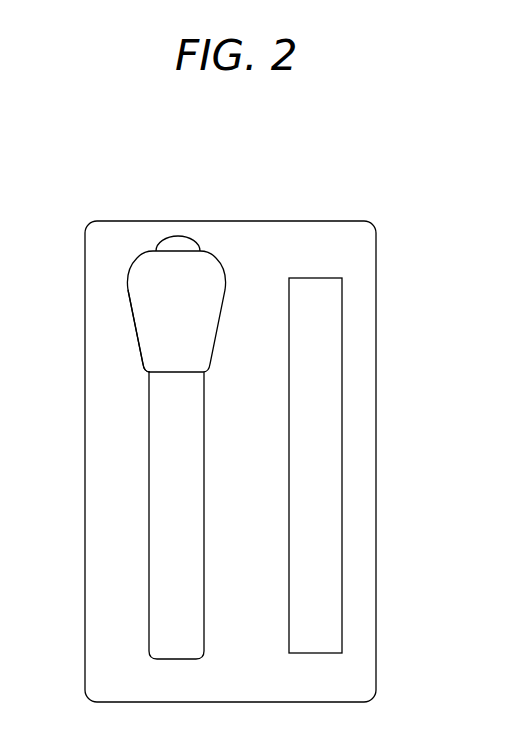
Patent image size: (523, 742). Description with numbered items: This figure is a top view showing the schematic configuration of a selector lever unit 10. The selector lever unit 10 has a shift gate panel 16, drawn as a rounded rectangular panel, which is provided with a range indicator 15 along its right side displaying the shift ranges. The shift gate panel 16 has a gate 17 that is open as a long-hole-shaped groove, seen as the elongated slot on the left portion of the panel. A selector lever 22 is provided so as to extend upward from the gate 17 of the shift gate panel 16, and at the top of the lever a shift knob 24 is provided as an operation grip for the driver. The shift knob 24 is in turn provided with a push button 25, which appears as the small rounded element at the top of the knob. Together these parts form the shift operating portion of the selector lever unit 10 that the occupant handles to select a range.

The selector lever unit 10 is at (217, 190).
The range indicator 15 is at (342, 463).
The shift gate panel 16 is at (322, 221).
The gate 17 is at (149, 504).
The selector lever 22 is at (133, 245).
The shift knob 24 is at (131, 309).
The push button 25 is at (178, 237).